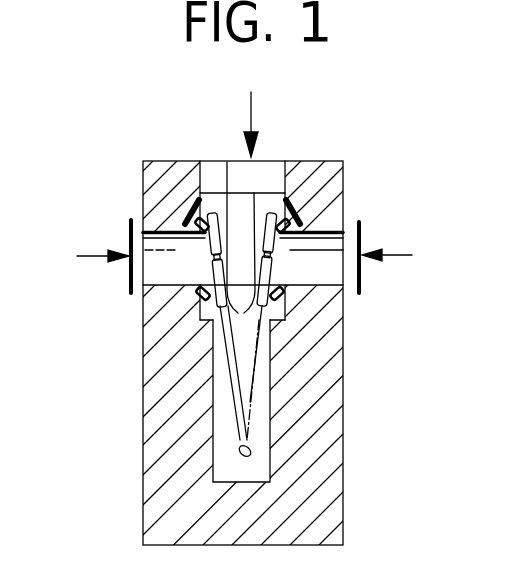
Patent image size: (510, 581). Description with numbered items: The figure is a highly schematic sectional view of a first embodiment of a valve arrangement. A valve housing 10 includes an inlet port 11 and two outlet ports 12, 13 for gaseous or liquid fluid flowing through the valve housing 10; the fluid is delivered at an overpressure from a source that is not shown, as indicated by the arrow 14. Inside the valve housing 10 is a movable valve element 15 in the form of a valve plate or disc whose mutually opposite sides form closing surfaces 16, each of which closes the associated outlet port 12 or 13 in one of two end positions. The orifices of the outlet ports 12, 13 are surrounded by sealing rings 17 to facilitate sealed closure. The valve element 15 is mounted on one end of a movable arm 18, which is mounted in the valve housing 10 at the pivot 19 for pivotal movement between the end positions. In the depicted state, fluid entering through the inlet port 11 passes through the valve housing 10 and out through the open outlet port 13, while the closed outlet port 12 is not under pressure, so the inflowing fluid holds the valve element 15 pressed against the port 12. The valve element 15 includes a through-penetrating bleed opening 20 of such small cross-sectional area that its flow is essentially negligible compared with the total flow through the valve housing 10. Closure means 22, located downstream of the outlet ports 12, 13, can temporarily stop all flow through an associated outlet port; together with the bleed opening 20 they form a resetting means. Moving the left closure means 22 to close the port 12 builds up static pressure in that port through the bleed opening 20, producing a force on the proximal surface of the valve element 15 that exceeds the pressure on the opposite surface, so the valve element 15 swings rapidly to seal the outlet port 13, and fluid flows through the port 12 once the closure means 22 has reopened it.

The valve housing 10 is at (343, 385).
The inlet port 11 is at (263, 178).
The outlet port 12 is at (172, 238).
The outlet port 13 is at (322, 245).
The arrow 14 is at (251, 103).
The valve element 15 is at (239, 258).
The closing surfaces 16 is at (216, 306).
The sealing rings 17 is at (198, 222).
The movable arm 18 is at (253, 387).
The pivot mounting 19 is at (238, 452).
The bleed opening 20 is at (200, 289).
The closure means 22 is at (128, 278).